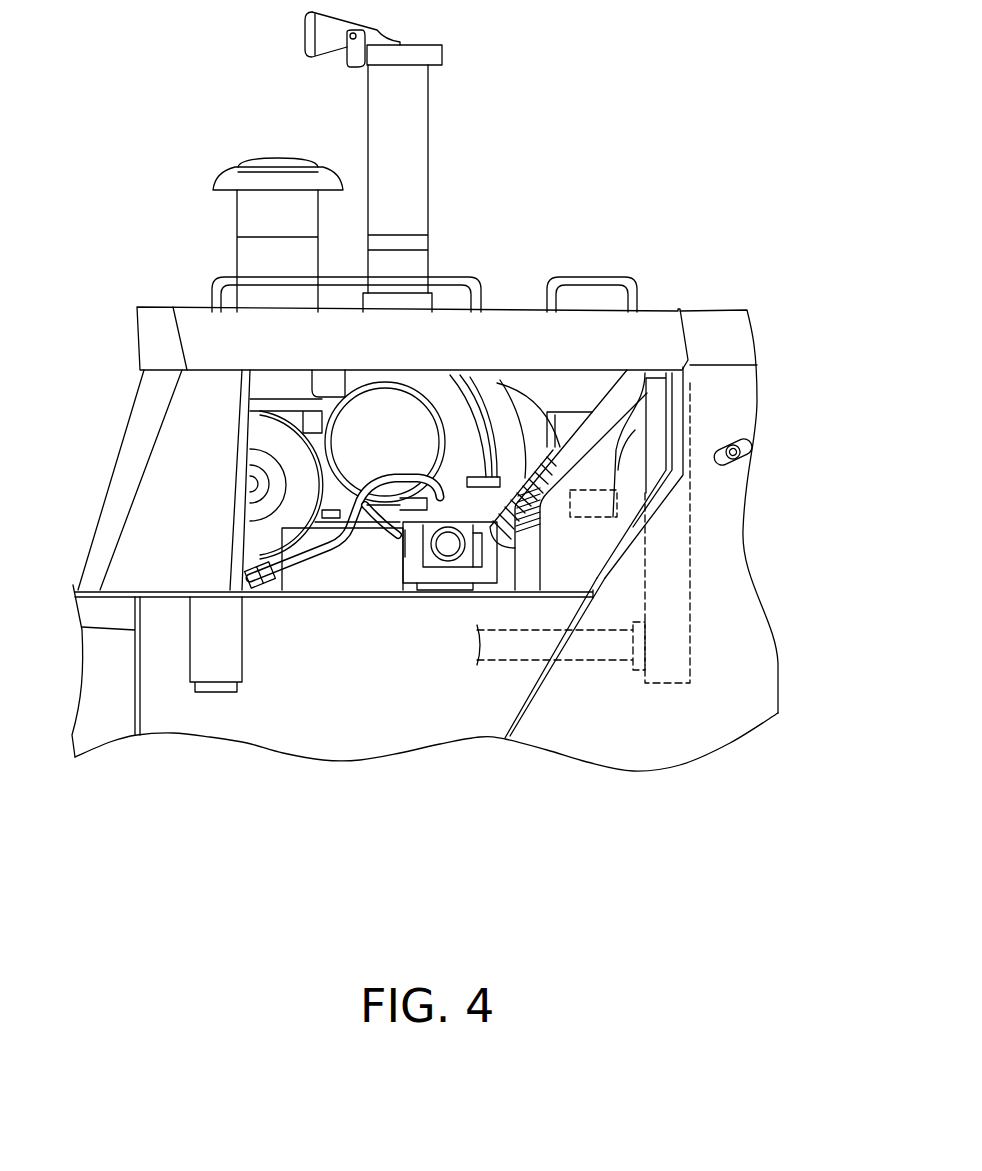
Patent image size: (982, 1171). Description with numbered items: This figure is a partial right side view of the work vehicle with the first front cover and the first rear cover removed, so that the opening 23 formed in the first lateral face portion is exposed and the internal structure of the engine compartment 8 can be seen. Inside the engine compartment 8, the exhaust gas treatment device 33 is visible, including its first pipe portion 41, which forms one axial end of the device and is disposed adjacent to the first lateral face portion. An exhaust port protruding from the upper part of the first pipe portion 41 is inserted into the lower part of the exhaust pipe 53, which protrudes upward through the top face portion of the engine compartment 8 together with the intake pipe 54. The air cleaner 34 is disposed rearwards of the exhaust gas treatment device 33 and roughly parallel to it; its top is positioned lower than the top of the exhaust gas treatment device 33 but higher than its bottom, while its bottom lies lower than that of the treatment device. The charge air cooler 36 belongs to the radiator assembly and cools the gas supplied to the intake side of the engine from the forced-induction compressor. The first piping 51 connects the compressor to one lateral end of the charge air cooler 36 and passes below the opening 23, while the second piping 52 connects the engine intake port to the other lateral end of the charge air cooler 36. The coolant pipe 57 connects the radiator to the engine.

The engine compartment 8 is at (665, 265).
The opening 23 is at (350, 570).
The exhaust gas treatment device 33 is at (453, 418).
The air cleaner 34 is at (265, 440).
The charge air cooler 36 is at (657, 406).
The first pipe portion 41 is at (388, 445).
The first piping 51 is at (593, 645).
The second piping 52 is at (642, 422).
The exhaust pipe 53 is at (418, 103).
The intake pipe 54 is at (263, 180).
The coolant pipe 57 is at (597, 432).